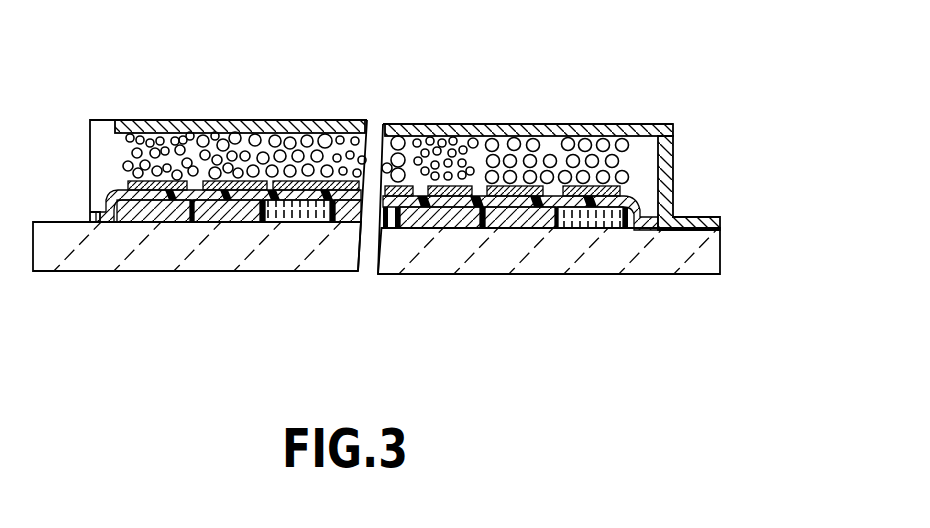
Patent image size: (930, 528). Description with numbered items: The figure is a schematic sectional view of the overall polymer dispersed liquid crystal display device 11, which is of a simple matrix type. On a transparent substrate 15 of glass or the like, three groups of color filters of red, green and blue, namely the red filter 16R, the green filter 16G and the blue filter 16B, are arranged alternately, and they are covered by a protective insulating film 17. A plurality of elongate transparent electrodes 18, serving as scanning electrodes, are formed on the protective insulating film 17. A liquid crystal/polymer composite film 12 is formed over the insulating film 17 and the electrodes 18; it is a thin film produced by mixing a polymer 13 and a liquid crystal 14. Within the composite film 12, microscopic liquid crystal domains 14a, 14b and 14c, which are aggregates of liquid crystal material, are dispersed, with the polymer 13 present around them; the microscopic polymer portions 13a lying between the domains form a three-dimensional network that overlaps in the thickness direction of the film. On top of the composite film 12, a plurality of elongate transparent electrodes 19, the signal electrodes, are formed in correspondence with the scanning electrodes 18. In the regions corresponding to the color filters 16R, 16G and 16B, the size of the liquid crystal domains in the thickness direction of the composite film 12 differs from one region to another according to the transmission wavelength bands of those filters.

The polymer dispersed liquid crystal display device 11 is at (106, 113).
The composite film 12 is at (338, 132).
The polymer 13 is at (643, 156).
The microscopic polymer portions 13a is at (187, 192).
The liquid crystal 14 is at (376, 103).
The liquid crystal domain 14a is at (176, 137).
The liquid crystal domain 14b is at (223, 139).
The liquid crystal domain 14c is at (433, 109).
The transparent substrate 15 is at (668, 272).
The red color filter 16R is at (135, 212).
The green color filter 16G is at (230, 210).
The blue color filter 16B is at (315, 210).
The protective insulating film 17 is at (400, 215).
The transparent electrodes 18 is at (170, 200).
The transparent electrodes 19 is at (398, 136).